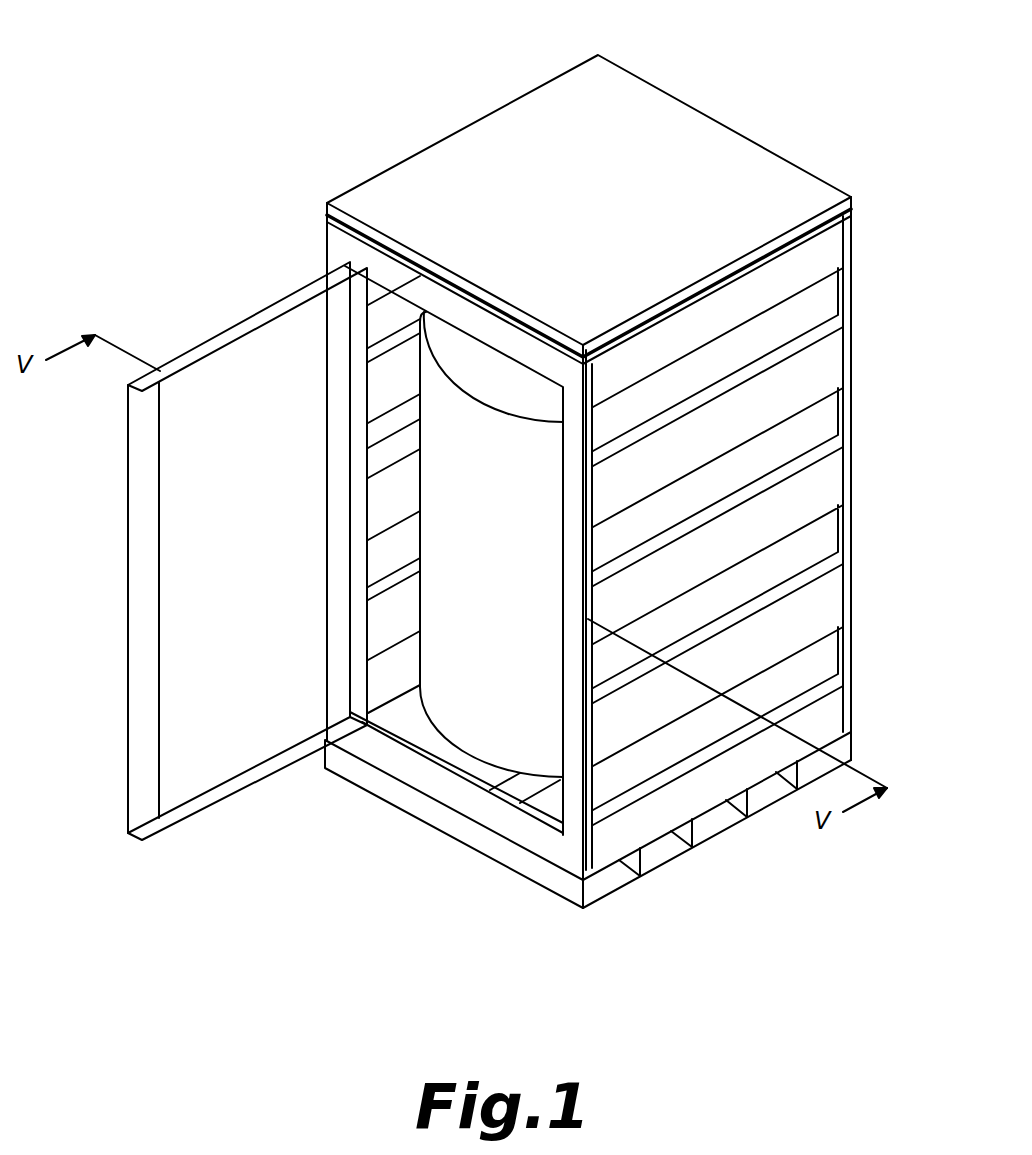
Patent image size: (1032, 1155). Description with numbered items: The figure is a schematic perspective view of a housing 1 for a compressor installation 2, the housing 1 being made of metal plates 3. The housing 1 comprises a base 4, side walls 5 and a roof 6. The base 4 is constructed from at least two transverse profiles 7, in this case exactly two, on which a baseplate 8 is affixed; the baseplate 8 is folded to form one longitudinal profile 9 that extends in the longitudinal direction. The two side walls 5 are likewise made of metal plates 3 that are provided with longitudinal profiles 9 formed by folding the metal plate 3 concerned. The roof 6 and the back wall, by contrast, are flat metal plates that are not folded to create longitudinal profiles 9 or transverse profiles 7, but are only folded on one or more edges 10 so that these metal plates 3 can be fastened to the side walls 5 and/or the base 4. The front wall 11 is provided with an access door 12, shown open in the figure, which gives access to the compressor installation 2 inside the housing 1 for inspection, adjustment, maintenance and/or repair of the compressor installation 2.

The housing 1 is at (312, 38).
The compressor installation 2 is at (485, 720).
The metal plate 3 is at (550, 132).
The base 4 is at (712, 842).
The side wall 5 is at (398, 316).
The roof 6 is at (712, 150).
The transverse profile 7 is at (662, 843).
The baseplate 8 is at (410, 712).
The longitudinal profile 9 is at (383, 396).
The edge 10 is at (333, 215).
The front wall 11 is at (541, 840).
The access door 12 is at (208, 685).